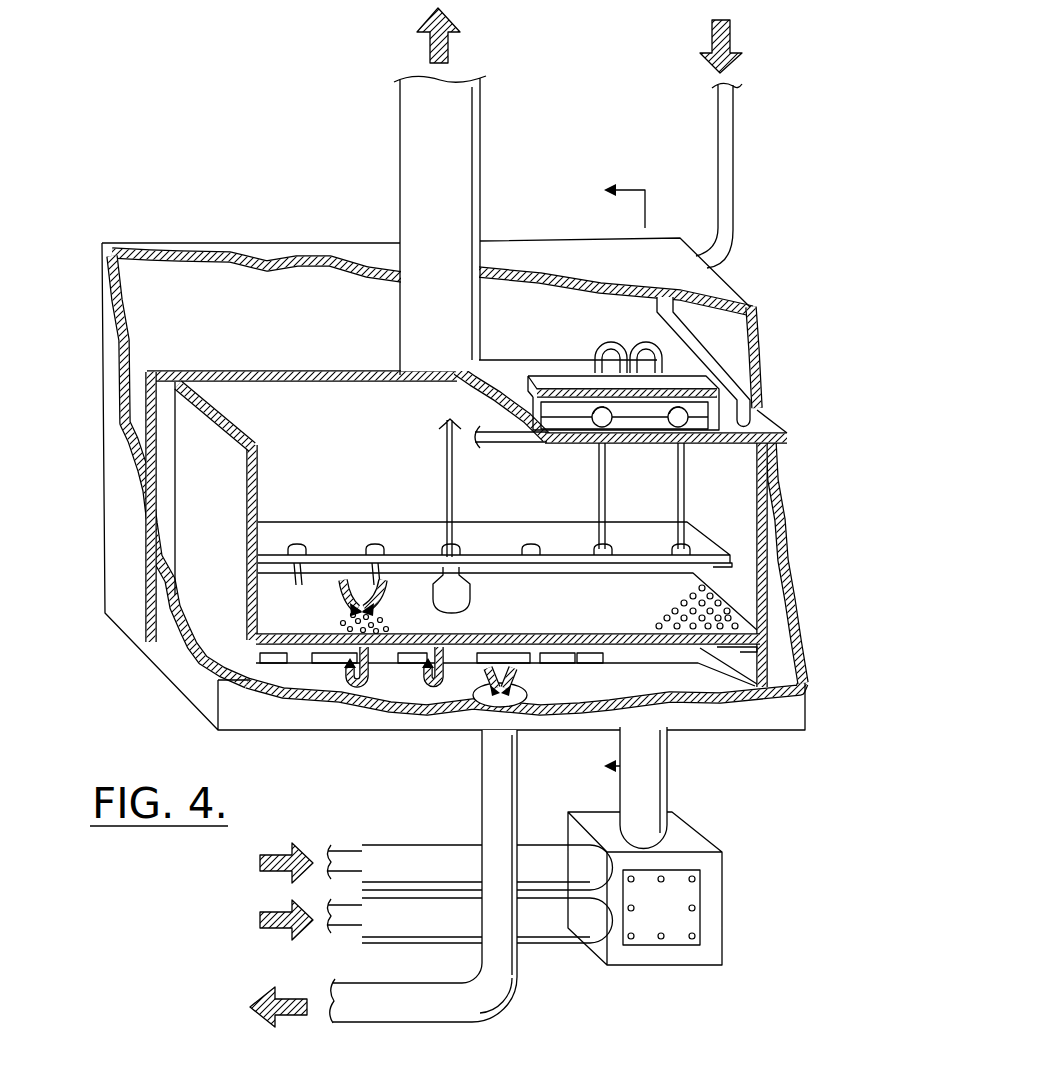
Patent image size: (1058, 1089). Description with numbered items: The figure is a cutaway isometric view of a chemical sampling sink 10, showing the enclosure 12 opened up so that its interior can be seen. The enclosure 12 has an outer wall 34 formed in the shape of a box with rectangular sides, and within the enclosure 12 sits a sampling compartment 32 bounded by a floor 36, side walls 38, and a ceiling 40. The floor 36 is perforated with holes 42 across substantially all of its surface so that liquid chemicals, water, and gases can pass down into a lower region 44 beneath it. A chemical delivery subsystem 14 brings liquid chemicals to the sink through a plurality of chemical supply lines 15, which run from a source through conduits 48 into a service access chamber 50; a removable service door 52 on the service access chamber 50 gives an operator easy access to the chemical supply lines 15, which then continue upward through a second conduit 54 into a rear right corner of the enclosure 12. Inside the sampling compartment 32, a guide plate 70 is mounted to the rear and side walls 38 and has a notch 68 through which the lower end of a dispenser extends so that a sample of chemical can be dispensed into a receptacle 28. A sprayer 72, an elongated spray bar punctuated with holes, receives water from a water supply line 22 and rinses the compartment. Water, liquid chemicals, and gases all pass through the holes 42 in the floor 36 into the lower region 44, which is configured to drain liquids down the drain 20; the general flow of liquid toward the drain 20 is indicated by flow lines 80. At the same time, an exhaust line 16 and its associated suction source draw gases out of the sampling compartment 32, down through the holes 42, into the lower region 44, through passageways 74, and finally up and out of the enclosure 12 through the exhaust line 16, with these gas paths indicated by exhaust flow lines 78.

The chemical sampling sink 10 is at (822, 72).
The enclosure 12 is at (186, 244).
The chemical delivery subsystem 14 is at (663, 983).
The chemical supply lines 15 is at (637, 343).
The exhaust line 16 is at (481, 127).
The drain 20 is at (410, 1025).
The water supply line 22 is at (735, 143).
The receptacle 28 is at (445, 614).
The sampling compartment 32 is at (737, 488).
The outer wall 34 is at (363, 246).
The floor 36 is at (807, 705).
The side walls 38 is at (768, 580).
The ceiling 40 is at (766, 458).
The holes 42 is at (756, 636).
The lower region 44 is at (702, 678).
The conduits 48 is at (402, 898).
The service access chamber 50 is at (722, 879).
The service door 52 is at (699, 922).
The second conduit 54 is at (670, 783).
The notch 68 is at (297, 585).
The guide plate 70 is at (270, 562).
The sprayer 72 is at (499, 443).
The passageways 74 is at (333, 664).
The exhaust flow lines 78 is at (350, 604).
The flow lines 80 is at (508, 690).